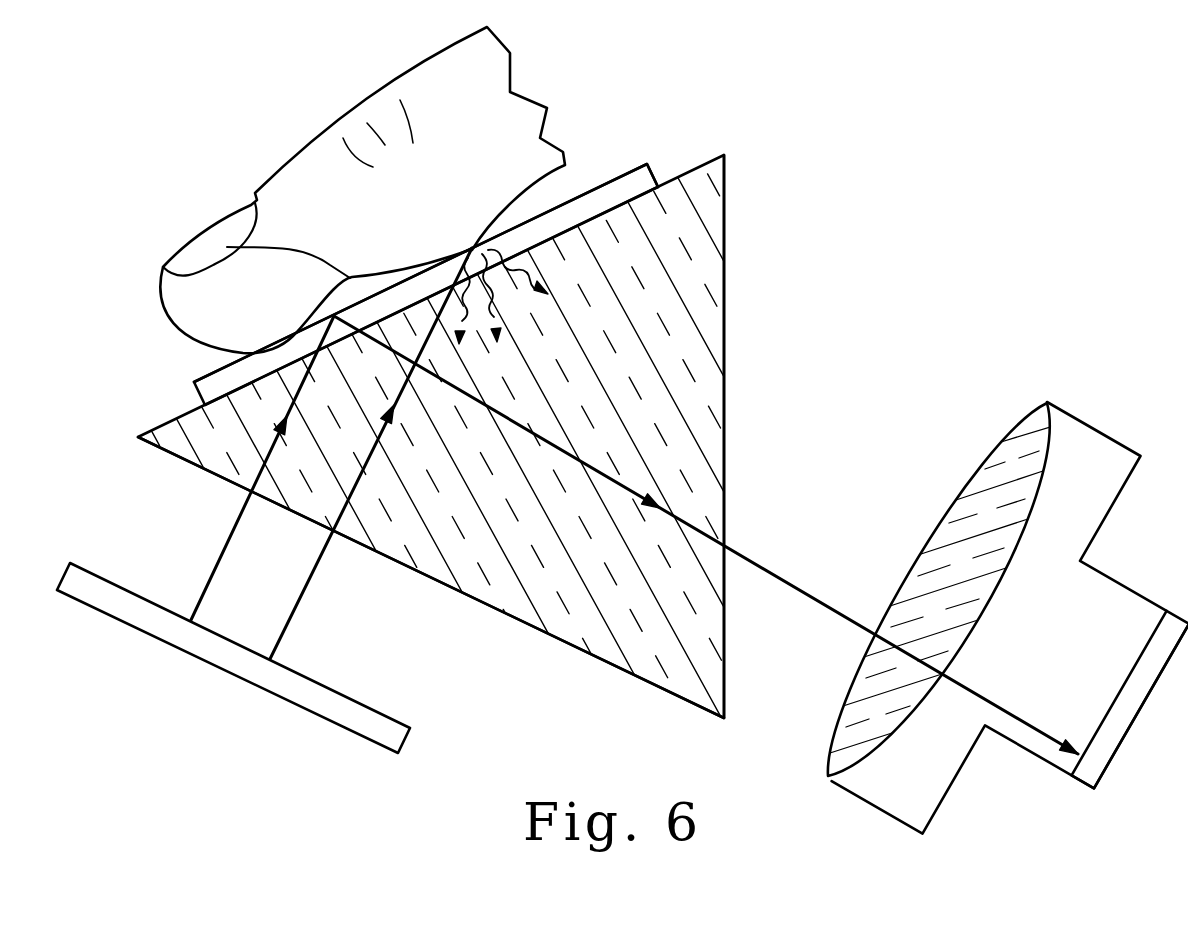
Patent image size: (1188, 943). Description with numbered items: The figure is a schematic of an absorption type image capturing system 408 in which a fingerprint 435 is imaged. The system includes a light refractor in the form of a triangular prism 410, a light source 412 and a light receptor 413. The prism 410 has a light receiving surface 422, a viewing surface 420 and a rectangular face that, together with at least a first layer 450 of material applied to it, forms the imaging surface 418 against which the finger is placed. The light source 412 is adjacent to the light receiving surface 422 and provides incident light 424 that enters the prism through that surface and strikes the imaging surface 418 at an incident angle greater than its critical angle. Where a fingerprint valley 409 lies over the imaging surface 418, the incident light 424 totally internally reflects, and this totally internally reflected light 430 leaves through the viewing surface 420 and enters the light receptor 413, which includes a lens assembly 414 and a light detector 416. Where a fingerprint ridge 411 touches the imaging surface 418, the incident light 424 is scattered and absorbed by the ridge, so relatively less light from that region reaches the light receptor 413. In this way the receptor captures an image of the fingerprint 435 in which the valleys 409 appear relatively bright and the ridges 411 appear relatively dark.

The image capturing system 408 is at (946, 224).
The fingerprint valley 409 is at (227, 247).
The triangular prism 410 is at (728, 237).
The fingerprint ridge 411 is at (462, 250).
The light source 412 is at (207, 663).
The light receptor 413 is at (1105, 436).
The lens assembly 414 is at (992, 446).
The light detector 416 is at (1078, 790).
The imaging surface 418 is at (616, 172).
The viewing surface 420 is at (726, 347).
The light receiving surface 422 is at (583, 652).
The incident light 424 is at (215, 558).
The totally internally reflected light 430 is at (558, 449).
The fingerprint 435 is at (355, 228).
The first layer 450 is at (658, 178).